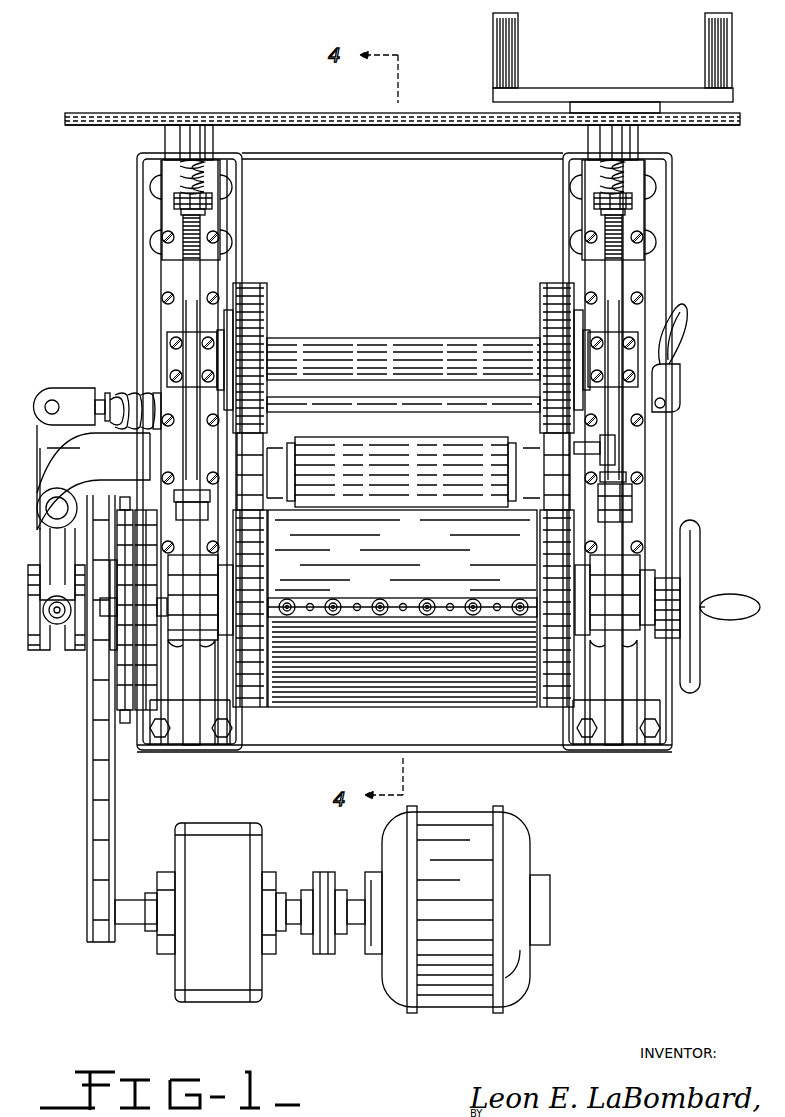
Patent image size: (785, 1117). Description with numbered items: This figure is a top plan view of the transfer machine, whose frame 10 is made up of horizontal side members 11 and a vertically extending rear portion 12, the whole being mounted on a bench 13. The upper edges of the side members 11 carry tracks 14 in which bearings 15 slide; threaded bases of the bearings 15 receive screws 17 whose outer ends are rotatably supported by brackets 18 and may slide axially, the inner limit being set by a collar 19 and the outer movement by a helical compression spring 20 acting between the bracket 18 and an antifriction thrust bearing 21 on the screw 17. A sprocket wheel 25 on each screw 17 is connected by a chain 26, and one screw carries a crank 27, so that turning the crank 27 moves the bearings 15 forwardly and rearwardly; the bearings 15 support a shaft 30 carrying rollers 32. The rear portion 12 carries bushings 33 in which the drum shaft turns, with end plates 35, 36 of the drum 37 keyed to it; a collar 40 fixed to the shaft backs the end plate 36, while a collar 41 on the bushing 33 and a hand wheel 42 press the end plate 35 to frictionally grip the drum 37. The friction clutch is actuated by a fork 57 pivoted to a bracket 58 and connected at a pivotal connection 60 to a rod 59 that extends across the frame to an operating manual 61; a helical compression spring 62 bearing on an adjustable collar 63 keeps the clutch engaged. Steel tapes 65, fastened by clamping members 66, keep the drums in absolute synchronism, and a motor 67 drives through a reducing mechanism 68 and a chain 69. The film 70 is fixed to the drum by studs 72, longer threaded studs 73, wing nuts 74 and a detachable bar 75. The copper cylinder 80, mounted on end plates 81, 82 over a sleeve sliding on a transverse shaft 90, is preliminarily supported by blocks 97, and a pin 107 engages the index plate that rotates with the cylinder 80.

The frame 10 is at (672, 475).
The side members 11 is at (162, 204).
The rear portion 12 is at (193, 748).
The bench 13 is at (316, 749).
The tracks 14 is at (170, 278).
The bearings 15 is at (402, 359).
The screws 17 is at (202, 230).
The brackets 18 is at (210, 150).
The collar 19 is at (170, 130).
The helical compression spring 20 is at (205, 178).
The antifriction thrust bearing 21 is at (213, 202).
The sprocket wheel 25 is at (142, 114).
The chain 26 is at (424, 113).
The crank 27 is at (517, 80).
The shaft 30 is at (356, 343).
The rollers 32 is at (262, 293).
The bushings 33 is at (165, 575).
The end plate 35 is at (552, 710).
The end plate 36 is at (256, 710).
The drum 37 is at (428, 708).
The collar 40 is at (228, 587).
The collar 41 is at (582, 576).
The hand wheel 42 is at (693, 562).
The fork 57 is at (40, 536).
The bracket 58 is at (60, 472).
The rod 59 is at (394, 412).
The pivotal connection 60 is at (52, 400).
The operating manual 61 is at (680, 337).
The helical compression spring 62 is at (127, 397).
The adjustable collar 63 is at (104, 395).
The steel tapes 65 is at (148, 655).
The clamping members 66 is at (138, 500).
The motor 67 is at (520, 823).
The reducing mechanism 68 is at (238, 824).
The chain 69 is at (110, 813).
The film 70 is at (402, 608).
The studs 72 is at (357, 602).
The studs 73 is at (427, 600).
The wing nuts 74 is at (290, 600).
The detachable bar 75 is at (498, 598).
The cylinder 80 is at (332, 442).
The end plate 81 is at (290, 457).
The end plate 82 is at (516, 450).
The shaft 90 is at (632, 496).
The blocks 97 is at (191, 490).
The pin 107 is at (617, 445).